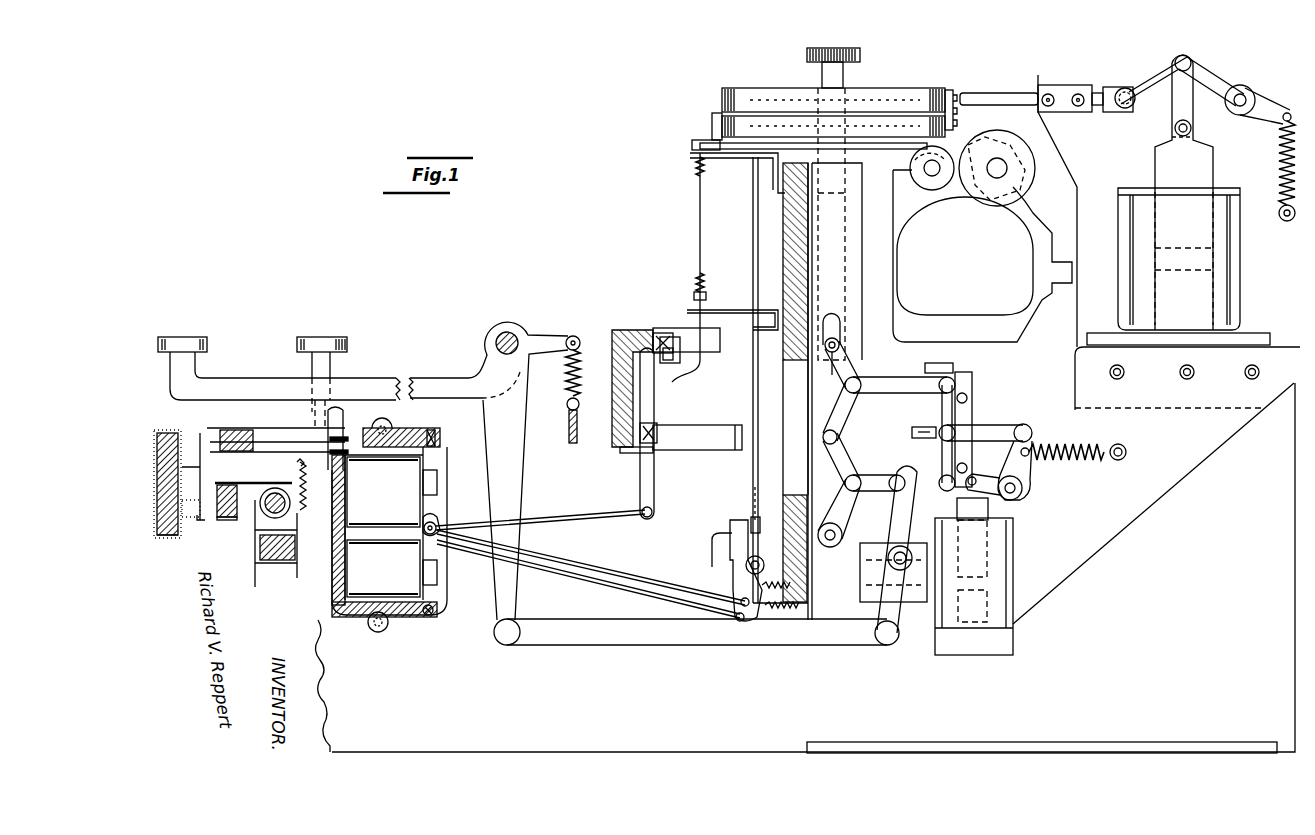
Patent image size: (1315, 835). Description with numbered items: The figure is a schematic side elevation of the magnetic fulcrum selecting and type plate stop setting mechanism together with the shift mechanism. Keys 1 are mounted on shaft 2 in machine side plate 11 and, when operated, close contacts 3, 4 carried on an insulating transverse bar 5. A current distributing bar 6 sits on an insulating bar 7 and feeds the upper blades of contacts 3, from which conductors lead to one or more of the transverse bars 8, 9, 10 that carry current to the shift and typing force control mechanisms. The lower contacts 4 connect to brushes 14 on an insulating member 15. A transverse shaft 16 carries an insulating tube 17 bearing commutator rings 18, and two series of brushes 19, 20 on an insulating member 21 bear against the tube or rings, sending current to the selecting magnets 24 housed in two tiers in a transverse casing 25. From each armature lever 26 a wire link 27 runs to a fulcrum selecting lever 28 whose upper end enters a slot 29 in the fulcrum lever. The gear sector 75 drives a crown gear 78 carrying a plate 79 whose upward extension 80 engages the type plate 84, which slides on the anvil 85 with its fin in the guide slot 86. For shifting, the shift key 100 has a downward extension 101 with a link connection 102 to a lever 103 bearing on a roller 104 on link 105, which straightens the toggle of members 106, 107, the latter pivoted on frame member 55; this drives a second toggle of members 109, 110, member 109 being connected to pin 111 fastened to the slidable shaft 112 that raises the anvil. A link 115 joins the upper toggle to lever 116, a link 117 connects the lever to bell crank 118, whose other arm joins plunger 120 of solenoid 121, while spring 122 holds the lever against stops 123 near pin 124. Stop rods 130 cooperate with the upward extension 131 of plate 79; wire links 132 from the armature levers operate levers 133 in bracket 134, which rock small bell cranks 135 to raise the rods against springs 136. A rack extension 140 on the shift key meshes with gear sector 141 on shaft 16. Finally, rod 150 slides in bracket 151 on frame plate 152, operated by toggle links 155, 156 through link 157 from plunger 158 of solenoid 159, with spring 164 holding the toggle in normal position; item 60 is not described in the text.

The keys 1 is at (248, 386).
The shaft 2 is at (513, 333).
The contacts 3 is at (336, 427).
The contacts 4 is at (350, 439).
The transverse bar 5 is at (232, 430).
The current distributing bar 6 is at (180, 433).
The bar 7 is at (163, 538).
The transverse bar 8 is at (198, 467).
The transverse bar 9 is at (192, 500).
The transverse bar 10 is at (200, 520).
The machine side plate 11 is at (805, 568).
The brushes 14 is at (240, 486).
The transverse member 15 is at (227, 518).
The transverse shaft 16 is at (290, 510).
The tube 17 is at (273, 516).
The commutator rings 18 is at (268, 493).
The brushes 19 is at (255, 575).
The brushes 20 is at (296, 548).
The transverse member 21 is at (284, 564).
The selecting magnets 24 is at (375, 548).
The transverse casing 25 is at (352, 616).
The armature lever 26 is at (437, 477).
The wire link 27 is at (640, 588).
The fulcrum selecting lever 28 is at (728, 530).
The slot 29 is at (760, 517).
The frame member 55 is at (783, 278).
The rod 60 is at (755, 487).
The gear sector 75 is at (753, 225).
The crown gear 78 is at (753, 160).
The plate 79 is at (712, 128).
The upward extension 80 is at (905, 150).
The type plate 84 is at (953, 95).
The anvil 85 is at (893, 90).
The guide slot 86 is at (740, 95).
The shift key 100 is at (347, 341).
The downward extension 101 is at (515, 487).
The link connection 102 is at (722, 638).
The lever 103 is at (897, 618).
The roller 104 is at (897, 475).
The link 105 is at (914, 490).
The toggle member 106 is at (845, 478).
The toggle member 107 is at (845, 516).
The toggle member 109 is at (858, 365).
The toggle member 110 is at (846, 418).
The pin 111 is at (830, 358).
The shaft 112 is at (850, 210).
The link 115 is at (908, 393).
The lever 116 is at (942, 461).
The link 117 is at (982, 423).
The bell crank 118 is at (1030, 478).
The plunger 120 is at (988, 508).
The solenoid 121 is at (1000, 549).
The spring 122 is at (1088, 462).
The stops 123 is at (966, 396).
The pin 124 is at (912, 433).
The stop rods 130 is at (700, 215).
The upward extension 131 is at (692, 143).
The wire link connection 132 is at (583, 520).
The levers 133 is at (647, 490).
The bracket 134 is at (612, 432).
The small bell cranks 135 is at (665, 368).
The springs 136 is at (702, 278).
The rack extension 140 is at (298, 462).
The gear sector 141 is at (300, 462).
The rod 150 is at (1008, 93).
The bracket 151 is at (1065, 88).
The frame plate 152 is at (1187, 347).
The toggle link 155 is at (1140, 78).
The toggle link 156 is at (1225, 72).
The link 157 is at (1172, 112).
The plunger 158 is at (1213, 168).
The solenoid 159 is at (1232, 248).
The spring 164 is at (1278, 140).